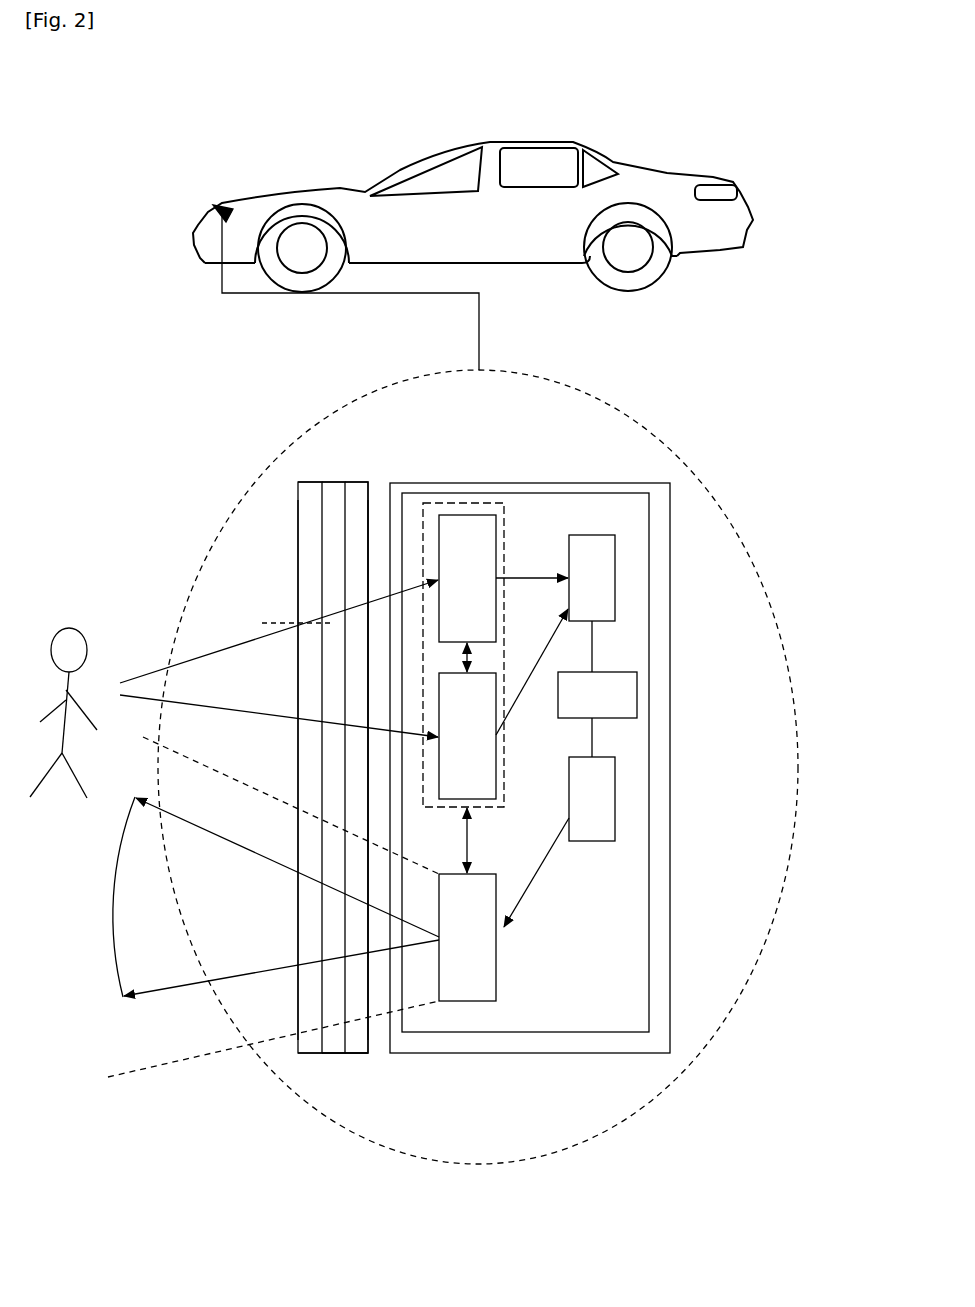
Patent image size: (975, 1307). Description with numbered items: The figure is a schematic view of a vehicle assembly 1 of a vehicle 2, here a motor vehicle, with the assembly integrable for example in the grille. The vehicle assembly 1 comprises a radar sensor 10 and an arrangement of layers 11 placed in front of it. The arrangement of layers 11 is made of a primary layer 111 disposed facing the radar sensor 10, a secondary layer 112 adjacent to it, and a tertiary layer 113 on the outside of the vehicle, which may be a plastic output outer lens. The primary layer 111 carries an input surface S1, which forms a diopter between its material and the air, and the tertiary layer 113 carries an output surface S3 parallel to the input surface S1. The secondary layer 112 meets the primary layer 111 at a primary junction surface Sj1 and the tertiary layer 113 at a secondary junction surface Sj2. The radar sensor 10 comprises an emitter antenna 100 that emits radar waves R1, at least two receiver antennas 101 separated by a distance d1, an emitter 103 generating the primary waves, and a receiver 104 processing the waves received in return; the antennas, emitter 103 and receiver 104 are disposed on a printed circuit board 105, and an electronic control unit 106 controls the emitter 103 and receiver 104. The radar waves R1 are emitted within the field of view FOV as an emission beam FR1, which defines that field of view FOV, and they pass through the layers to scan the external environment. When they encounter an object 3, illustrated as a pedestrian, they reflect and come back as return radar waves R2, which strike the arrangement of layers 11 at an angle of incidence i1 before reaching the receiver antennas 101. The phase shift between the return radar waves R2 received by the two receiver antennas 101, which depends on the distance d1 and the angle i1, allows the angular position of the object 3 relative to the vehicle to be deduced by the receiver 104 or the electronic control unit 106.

The vehicle assembly 1 is at (503, 370).
The vehicle 2 is at (390, 145).
The object 3 is at (73, 626).
The radar sensor 10 is at (481, 476).
The arrangement of layers 11 is at (457, 408).
The primary layer 111 is at (357, 495).
The secondary layer 112 is at (333, 495).
The tertiary layer 113 is at (313, 490).
The emitter antenna 100 is at (467, 937).
The receiver antennas 101 is at (467, 657).
The emitter 103 is at (592, 799).
The receiver 104 is at (592, 578).
The printed circuit board 105 is at (525, 762).
The electronic control unit 106 is at (597, 695).
The input surface S1 is at (375, 515).
The output surface S3 is at (298, 576).
The primary junction surface Sj1 is at (350, 1053).
The secondary junction surface Sj2 is at (332, 1053).
The angle of incidence of the return radar waves i1 is at (272, 626).
The distance between the two receiver antennas d1 is at (469, 758).
The radar waves R1 is at (346, 897).
The return radar waves R2 is at (344, 640).
The field of view FOV is at (249, 907).
The emission beam FR1 is at (118, 897).